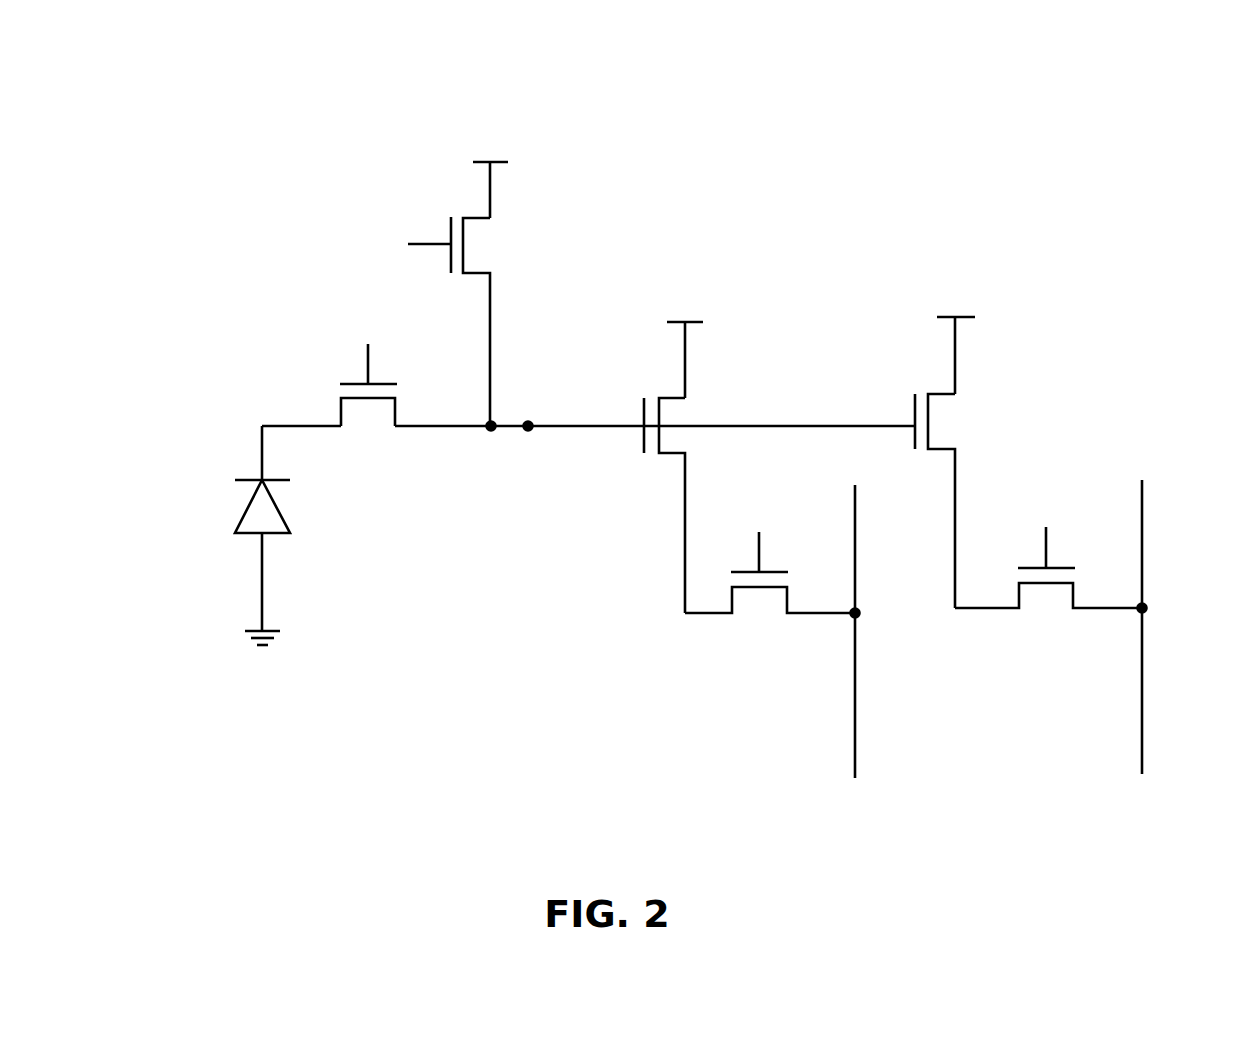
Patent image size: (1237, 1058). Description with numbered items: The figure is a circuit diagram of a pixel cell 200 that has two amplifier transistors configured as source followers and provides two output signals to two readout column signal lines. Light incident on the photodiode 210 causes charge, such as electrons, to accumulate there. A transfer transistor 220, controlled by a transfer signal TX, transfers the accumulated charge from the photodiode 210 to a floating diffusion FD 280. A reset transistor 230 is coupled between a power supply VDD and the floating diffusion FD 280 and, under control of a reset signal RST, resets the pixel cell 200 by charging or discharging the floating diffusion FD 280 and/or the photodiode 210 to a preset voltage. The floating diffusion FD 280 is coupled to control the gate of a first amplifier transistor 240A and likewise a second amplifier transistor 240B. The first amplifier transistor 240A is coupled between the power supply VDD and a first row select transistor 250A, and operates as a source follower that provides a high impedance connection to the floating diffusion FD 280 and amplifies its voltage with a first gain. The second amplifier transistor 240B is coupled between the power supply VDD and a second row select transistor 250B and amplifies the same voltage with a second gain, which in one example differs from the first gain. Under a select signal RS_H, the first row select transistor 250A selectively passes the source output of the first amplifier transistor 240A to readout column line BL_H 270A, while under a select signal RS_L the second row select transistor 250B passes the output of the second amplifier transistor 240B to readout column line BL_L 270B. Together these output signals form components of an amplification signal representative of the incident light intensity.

The pixel cell 200 is at (1186, 67).
The photodiode 210 is at (243, 490).
The transfer transistor 220 is at (365, 413).
The reset transistor 230 is at (487, 236).
The first amplifier transistor 240A is at (683, 407).
The second amplifier transistor 240B is at (950, 417).
The first row select transistor 250A is at (760, 615).
The second row select transistor 250B is at (1047, 610).
The readout column line BL_H 270A is at (858, 672).
The readout column line BL_L 270B is at (1143, 677).
The floating diffusion FD 280 is at (532, 440).